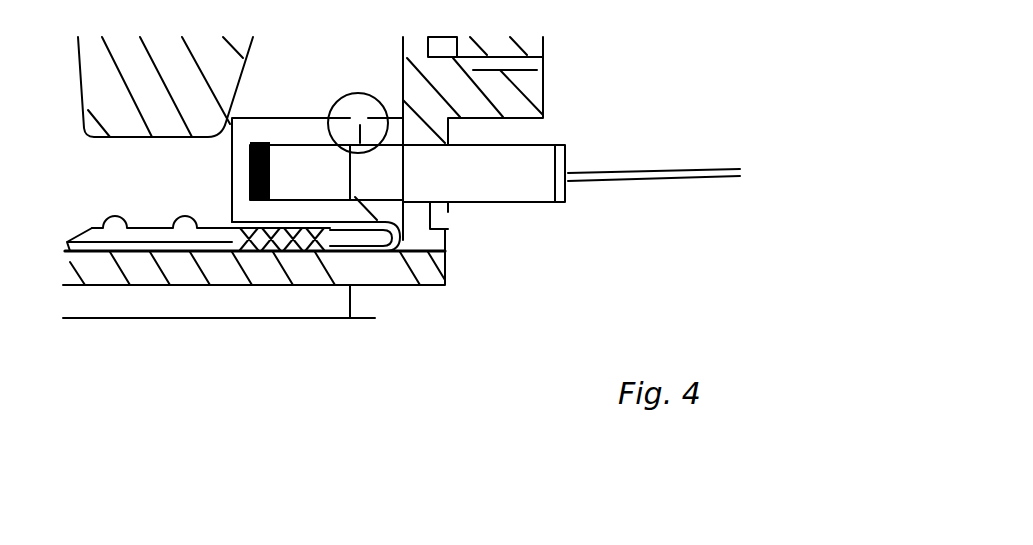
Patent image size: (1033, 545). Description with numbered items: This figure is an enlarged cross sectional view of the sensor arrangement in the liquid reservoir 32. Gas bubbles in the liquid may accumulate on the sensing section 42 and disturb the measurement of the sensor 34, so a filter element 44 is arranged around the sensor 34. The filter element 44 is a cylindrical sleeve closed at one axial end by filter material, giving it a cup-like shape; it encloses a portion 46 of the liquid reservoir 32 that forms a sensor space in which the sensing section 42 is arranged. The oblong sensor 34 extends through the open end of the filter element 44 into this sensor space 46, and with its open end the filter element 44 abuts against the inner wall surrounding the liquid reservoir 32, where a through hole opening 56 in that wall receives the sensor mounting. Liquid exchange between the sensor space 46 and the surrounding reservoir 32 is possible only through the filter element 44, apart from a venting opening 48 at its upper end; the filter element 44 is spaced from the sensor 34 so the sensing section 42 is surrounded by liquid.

The liquid reservoir 32 is at (74, 200).
The sensor 34 is at (527, 192).
The sensing section 42 is at (292, 165).
The filter element 44 is at (268, 256).
The portion of the liquid reservoir 46 is at (326, 212).
The venting opening 48 is at (357, 148).
The through hole opening 56 is at (448, 229).